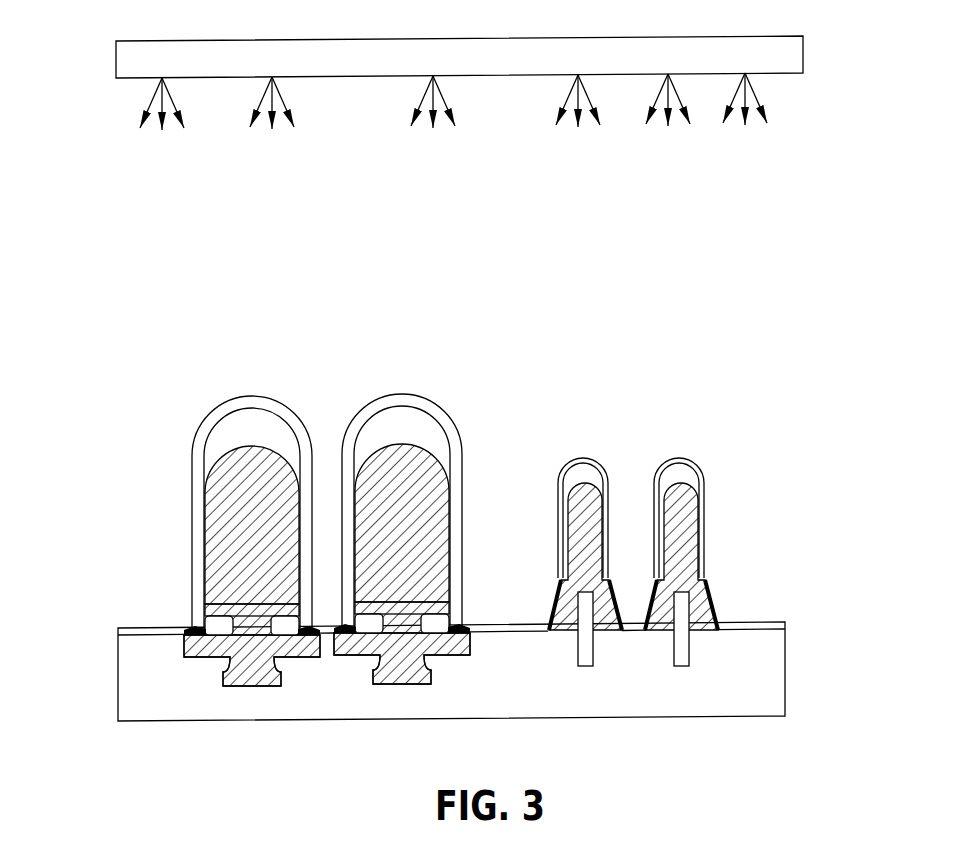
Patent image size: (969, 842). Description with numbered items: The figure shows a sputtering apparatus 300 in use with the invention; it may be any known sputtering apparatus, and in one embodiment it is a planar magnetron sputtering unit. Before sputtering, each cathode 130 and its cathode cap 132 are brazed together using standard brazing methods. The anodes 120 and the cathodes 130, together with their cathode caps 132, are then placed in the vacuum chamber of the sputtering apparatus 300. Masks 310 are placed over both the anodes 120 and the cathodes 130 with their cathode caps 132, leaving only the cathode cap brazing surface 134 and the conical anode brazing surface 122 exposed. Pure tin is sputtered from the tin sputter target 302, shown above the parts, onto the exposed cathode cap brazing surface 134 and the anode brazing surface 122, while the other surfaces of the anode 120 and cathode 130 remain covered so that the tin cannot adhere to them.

The tin sputter target 302 is at (138, 122).
The sputtering apparatus 300 is at (478, 509).
The masks 310 is at (288, 407).
The cathode 130 is at (248, 537).
The cathode cap brazing surface 134 is at (190, 632).
The cathode cap 132 is at (247, 643).
The anode 120 is at (703, 507).
The conical anode brazing surface 122 is at (714, 586).